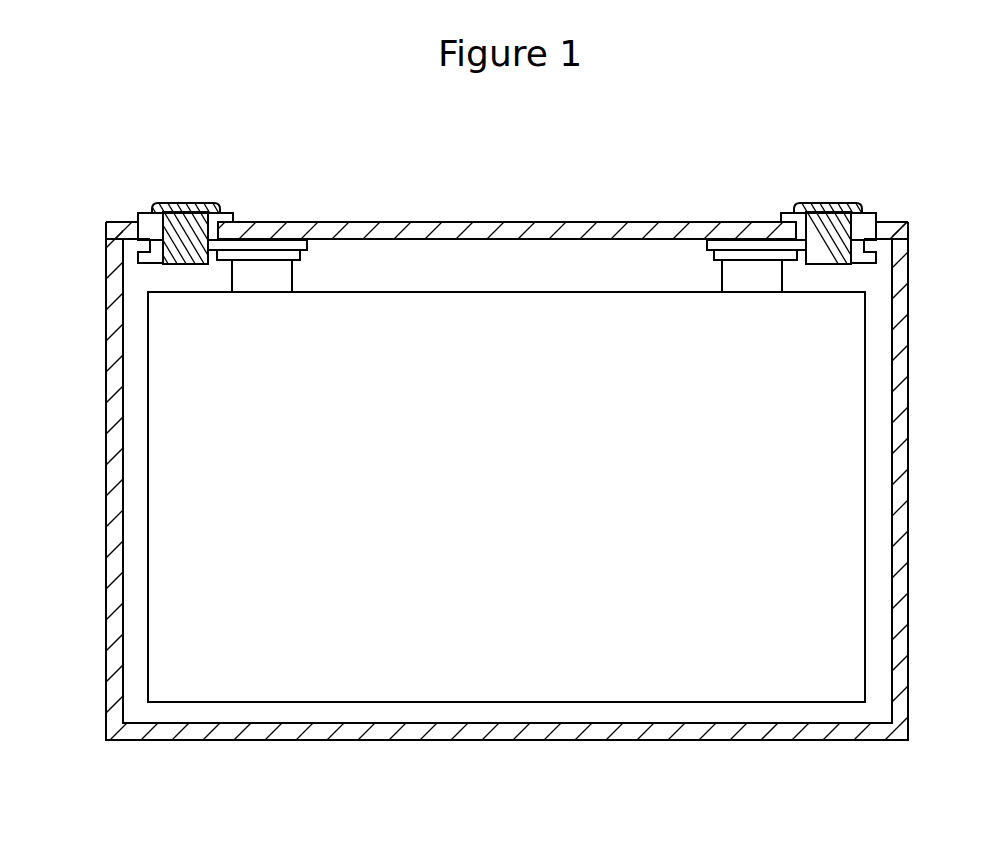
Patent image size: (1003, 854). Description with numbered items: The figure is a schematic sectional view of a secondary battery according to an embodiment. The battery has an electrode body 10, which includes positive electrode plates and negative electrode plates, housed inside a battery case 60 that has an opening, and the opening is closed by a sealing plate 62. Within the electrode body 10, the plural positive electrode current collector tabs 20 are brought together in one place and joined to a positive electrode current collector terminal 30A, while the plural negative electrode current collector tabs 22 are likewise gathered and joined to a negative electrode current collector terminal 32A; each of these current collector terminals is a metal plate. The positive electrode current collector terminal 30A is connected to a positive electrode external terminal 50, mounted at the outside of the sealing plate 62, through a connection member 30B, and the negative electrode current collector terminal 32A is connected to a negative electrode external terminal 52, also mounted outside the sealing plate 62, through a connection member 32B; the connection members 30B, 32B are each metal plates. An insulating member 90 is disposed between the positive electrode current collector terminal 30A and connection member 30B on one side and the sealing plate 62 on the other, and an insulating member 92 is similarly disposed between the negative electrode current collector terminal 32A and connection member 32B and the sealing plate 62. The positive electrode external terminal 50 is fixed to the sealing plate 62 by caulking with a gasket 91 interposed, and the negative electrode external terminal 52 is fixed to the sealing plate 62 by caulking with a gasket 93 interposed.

The electrode body 10 is at (495, 677).
The positive electrode current collector tabs 20 is at (285, 280).
The negative electrode current collector tabs 22 is at (732, 281).
The positive electrode current collector terminal 30A is at (262, 252).
The connection member 30B is at (150, 258).
The negative electrode current collector terminal 32A is at (752, 255).
The connection member 32B is at (866, 256).
The positive electrode external terminal 50 is at (187, 205).
The negative electrode external terminal 52 is at (830, 204).
The battery case 60 is at (722, 735).
The sealing plate 62 is at (529, 232).
The insulating member 90 is at (245, 242).
The gasket 91 is at (144, 212).
The insulating member 92 is at (768, 243).
The gasket 93 is at (870, 210).